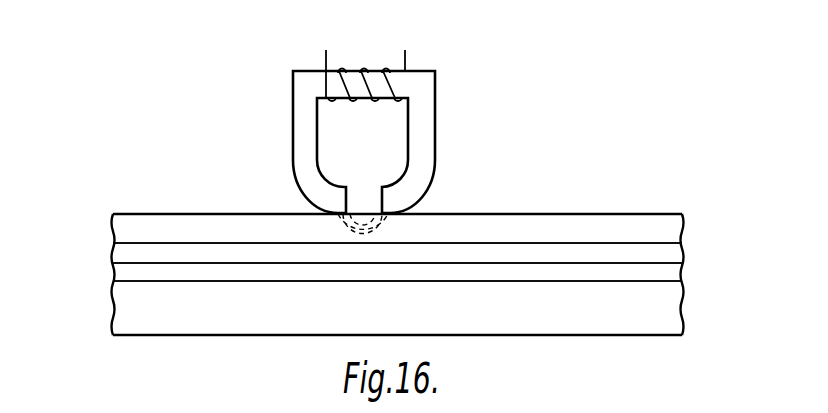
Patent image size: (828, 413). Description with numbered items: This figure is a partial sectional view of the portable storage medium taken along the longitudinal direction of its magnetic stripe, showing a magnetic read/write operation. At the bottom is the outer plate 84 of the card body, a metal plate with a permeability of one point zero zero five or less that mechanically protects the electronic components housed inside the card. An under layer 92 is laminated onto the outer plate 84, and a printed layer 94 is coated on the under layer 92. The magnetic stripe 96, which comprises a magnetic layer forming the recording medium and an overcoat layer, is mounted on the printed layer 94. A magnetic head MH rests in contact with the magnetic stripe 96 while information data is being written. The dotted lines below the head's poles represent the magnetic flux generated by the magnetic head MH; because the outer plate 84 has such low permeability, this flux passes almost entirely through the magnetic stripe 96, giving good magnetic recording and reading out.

The magnetic head MH is at (437, 117).
The magnetic stripe 96 is at (521, 225).
The printed layer 94 is at (675, 253).
The under layer 92 is at (670, 272).
The outer plate 84 is at (648, 317).